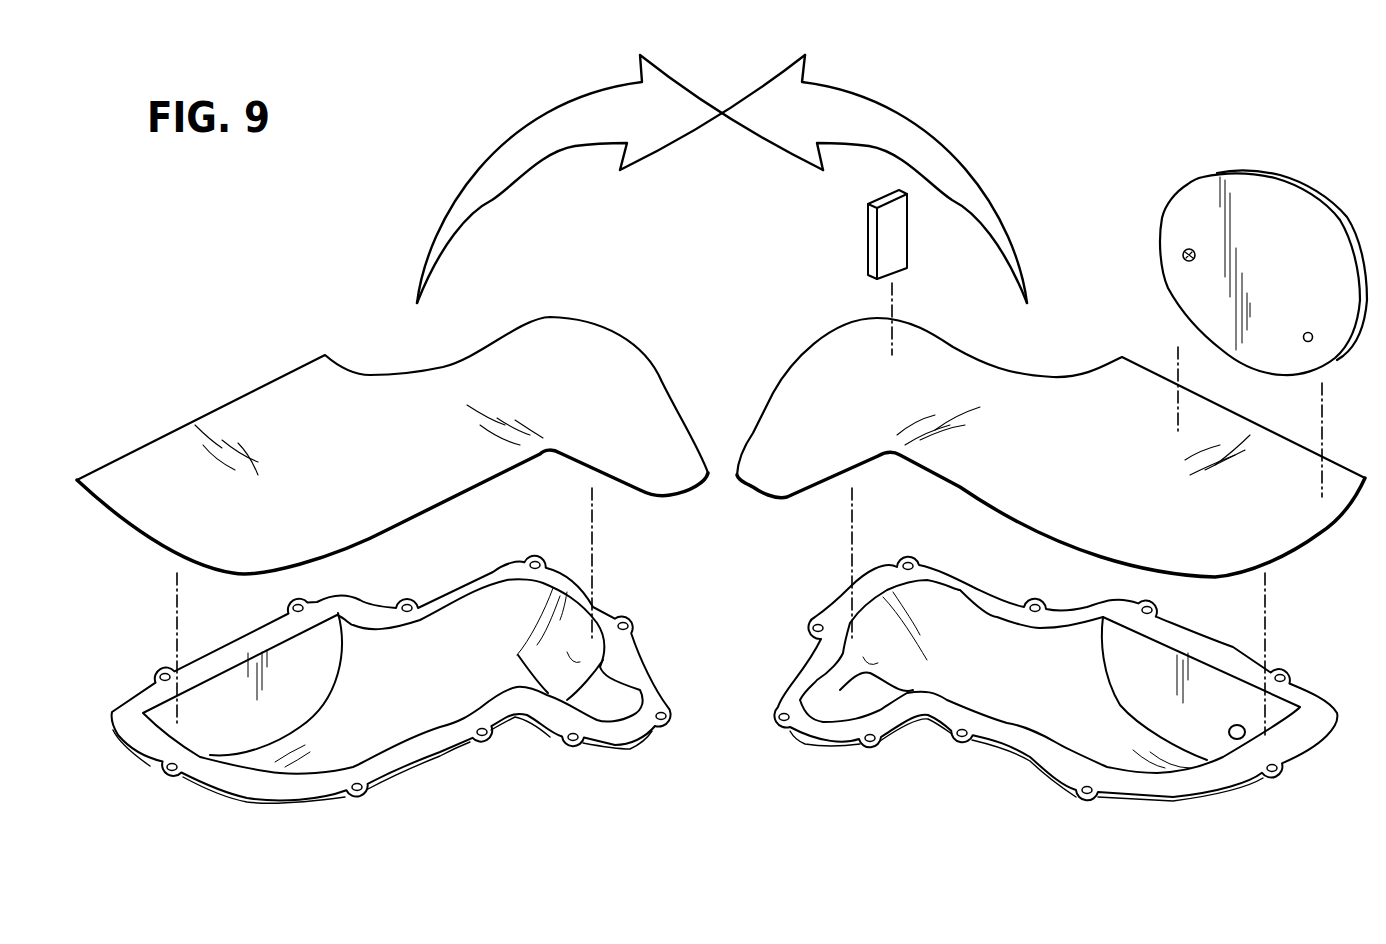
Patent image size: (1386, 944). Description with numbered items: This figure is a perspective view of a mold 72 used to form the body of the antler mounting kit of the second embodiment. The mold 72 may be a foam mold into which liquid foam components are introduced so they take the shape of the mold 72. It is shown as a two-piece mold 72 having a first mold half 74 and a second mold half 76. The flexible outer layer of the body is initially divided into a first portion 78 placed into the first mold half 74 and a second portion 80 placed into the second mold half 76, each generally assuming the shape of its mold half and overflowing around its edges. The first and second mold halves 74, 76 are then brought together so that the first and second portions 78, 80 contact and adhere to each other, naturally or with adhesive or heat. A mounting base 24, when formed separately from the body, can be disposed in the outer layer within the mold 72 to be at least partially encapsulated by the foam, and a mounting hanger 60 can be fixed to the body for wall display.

The mounting base 24 is at (873, 238).
The mounting hanger 60 is at (1282, 226).
The mold 72 is at (727, 762).
The first mold half 74 is at (407, 753).
The second mold half 76 is at (1022, 753).
The first portion 78 is at (287, 404).
The second portion 80 is at (1273, 518).